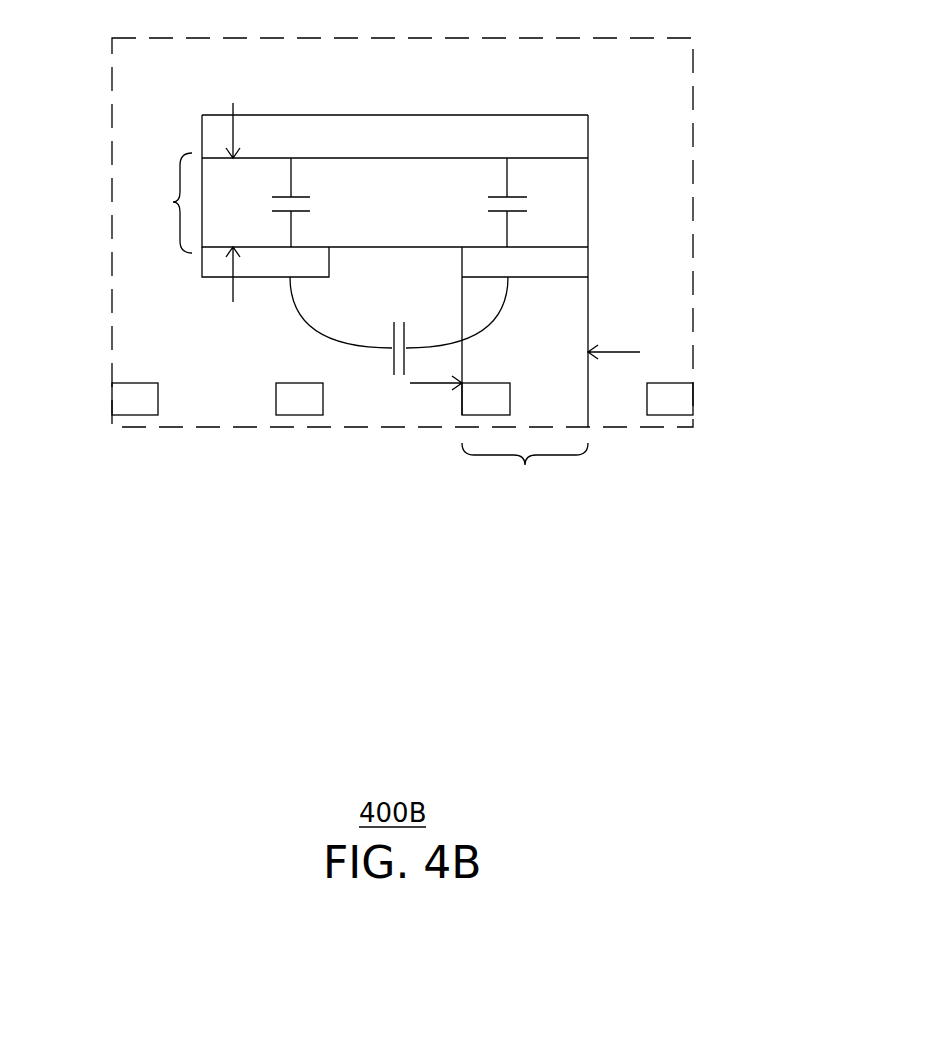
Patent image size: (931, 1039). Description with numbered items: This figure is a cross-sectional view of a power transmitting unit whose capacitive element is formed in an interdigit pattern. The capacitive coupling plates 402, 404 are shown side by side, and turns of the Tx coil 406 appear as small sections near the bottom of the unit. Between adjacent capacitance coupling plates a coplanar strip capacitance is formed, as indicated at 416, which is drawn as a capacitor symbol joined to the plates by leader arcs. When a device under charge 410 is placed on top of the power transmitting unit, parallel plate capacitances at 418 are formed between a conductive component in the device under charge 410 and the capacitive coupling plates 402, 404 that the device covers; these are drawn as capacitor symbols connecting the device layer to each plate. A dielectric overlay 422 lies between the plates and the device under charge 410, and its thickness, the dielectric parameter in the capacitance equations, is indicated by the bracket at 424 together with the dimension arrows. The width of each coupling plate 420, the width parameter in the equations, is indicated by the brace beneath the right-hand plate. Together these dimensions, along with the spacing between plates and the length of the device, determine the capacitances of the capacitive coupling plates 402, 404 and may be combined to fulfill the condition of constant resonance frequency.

The capacitive coupling plate 402 is at (213, 258).
The capacitive coupling plate 404 is at (568, 262).
The turns of the Tx coil 406 is at (480, 402).
The device under charge 410 is at (562, 137).
The coplanar strip capacitance 416 is at (392, 347).
The parallel plate capacitances 418 is at (291, 175).
The width of each coupling plate 420 is at (525, 425).
The dielectric overlay 422 is at (590, 181).
The bracket indicating dielectric overlay thickness 424 is at (180, 202).